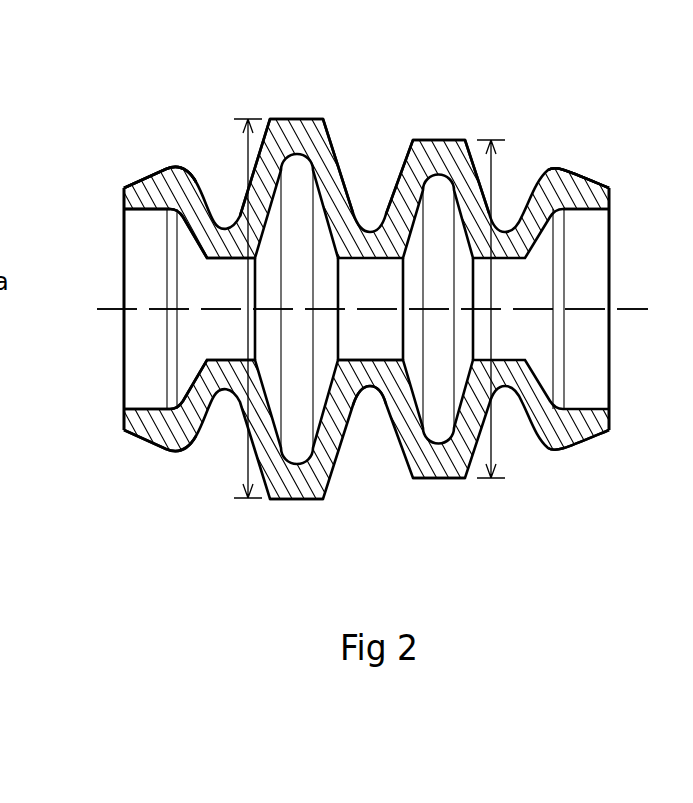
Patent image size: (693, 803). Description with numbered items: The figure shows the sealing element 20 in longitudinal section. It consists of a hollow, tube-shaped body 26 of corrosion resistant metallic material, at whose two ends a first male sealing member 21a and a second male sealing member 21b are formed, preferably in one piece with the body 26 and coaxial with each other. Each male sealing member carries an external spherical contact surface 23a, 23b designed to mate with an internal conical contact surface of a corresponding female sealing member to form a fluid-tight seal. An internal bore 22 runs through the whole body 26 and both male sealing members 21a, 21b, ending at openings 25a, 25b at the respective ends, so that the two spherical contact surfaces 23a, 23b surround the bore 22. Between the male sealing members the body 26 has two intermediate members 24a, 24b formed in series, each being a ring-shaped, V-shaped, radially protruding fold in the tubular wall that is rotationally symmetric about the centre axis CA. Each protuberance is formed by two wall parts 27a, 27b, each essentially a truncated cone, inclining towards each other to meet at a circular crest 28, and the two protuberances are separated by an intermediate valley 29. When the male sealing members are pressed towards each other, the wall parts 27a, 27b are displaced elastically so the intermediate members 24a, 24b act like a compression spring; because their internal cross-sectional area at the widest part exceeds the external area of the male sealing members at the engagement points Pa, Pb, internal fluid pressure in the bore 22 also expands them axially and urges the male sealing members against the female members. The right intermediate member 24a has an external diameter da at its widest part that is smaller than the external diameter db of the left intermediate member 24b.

The sealing element 20 is at (496, 66).
The first male sealing member 21a is at (580, 193).
The second male sealing member 21b is at (157, 190).
The internal bore 22 is at (152, 338).
The external spherical contact surface 23a is at (593, 442).
The external spherical contact surface 23b is at (143, 440).
The intermediate member 24a is at (451, 504).
The intermediate member 24b is at (280, 525).
The opening 25a is at (611, 248).
The opening 25b is at (123, 268).
The body 26 is at (375, 368).
The wall part 27a is at (324, 167).
The wall part 27b is at (267, 178).
The crest 28 is at (295, 127).
The intermediate valley 29 is at (368, 392).
The point of engagement Pa is at (582, 195).
The point of engagement Pb is at (158, 192).
The external diameter da is at (493, 452).
The external diameter db is at (238, 460).
The centre axis CA is at (633, 307).